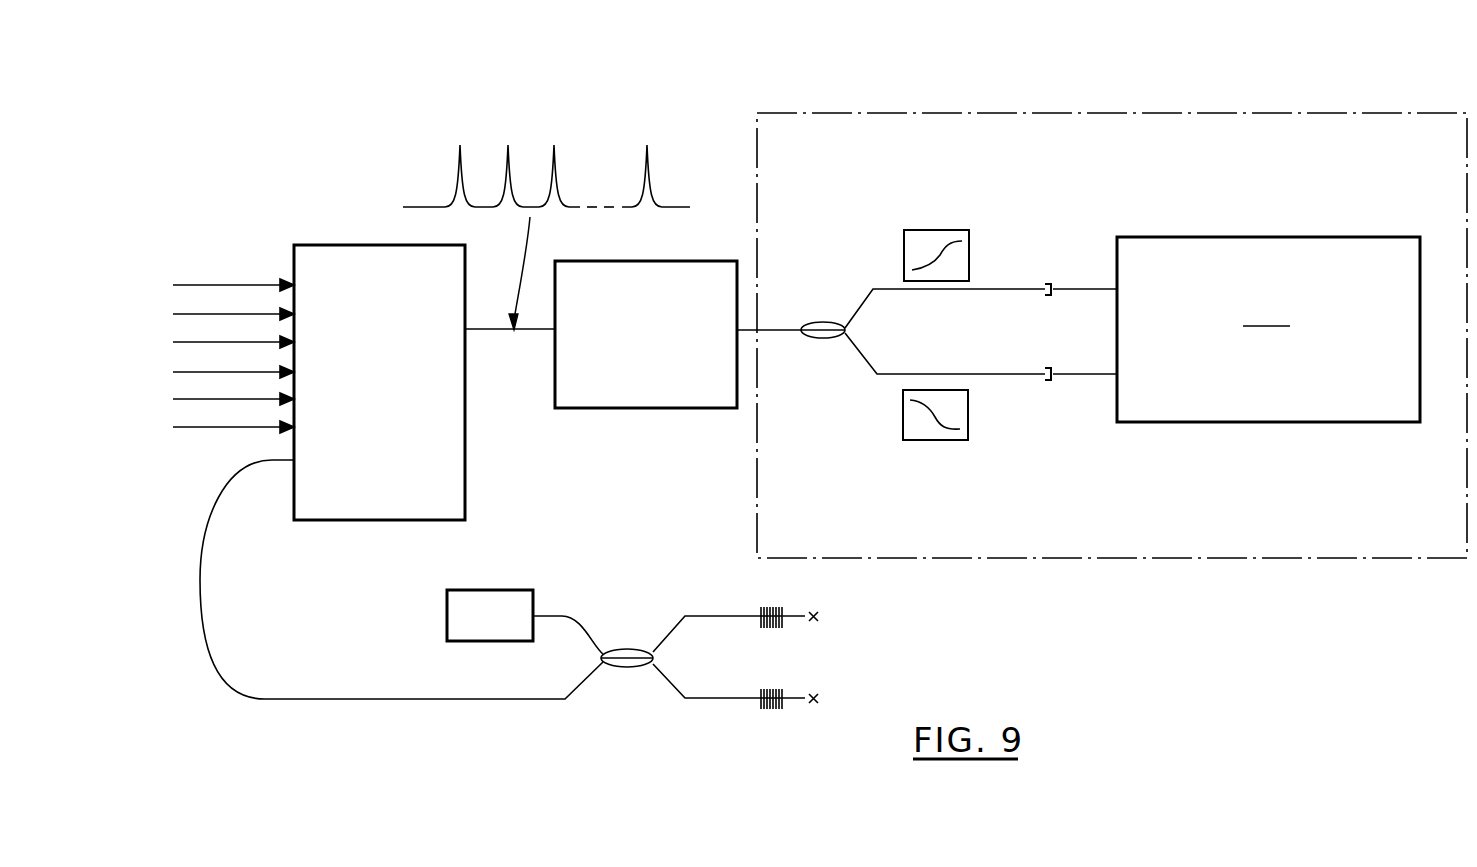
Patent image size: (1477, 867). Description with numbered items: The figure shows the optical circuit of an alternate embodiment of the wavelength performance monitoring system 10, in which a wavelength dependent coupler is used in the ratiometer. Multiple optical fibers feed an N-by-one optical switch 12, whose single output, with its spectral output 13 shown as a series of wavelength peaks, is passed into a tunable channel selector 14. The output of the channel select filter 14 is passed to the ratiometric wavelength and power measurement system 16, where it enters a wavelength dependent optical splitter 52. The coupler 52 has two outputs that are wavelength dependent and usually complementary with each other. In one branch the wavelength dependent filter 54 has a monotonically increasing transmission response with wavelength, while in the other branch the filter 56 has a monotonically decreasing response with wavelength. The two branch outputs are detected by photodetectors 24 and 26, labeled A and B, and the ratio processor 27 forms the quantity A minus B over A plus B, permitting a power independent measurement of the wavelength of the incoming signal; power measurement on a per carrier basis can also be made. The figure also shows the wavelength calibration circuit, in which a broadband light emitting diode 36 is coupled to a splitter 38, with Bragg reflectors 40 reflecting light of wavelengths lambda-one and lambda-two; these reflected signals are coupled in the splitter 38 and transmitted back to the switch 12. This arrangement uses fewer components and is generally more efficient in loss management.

The optical performance monitoring system 10 is at (892, 70).
The optical switch 12 is at (407, 521).
The spectral output 13 is at (650, 172).
The tunable channel selector 14 is at (675, 409).
The ratiometric wavelength and power measurement system 16 is at (1267, 110).
The photodetector 24 is at (1055, 296).
The photodetector 26 is at (1053, 367).
The ratio processor 27 is at (1260, 236).
The light emitting diode 36 is at (520, 590).
The splitter 38 is at (628, 668).
The Bragg reflectors 40 is at (764, 605).
The wavelength dependent optical splitter 52 is at (830, 345).
The wavelength dependent filter 54 is at (938, 228).
The wavelength dependent filter 56 is at (935, 442).